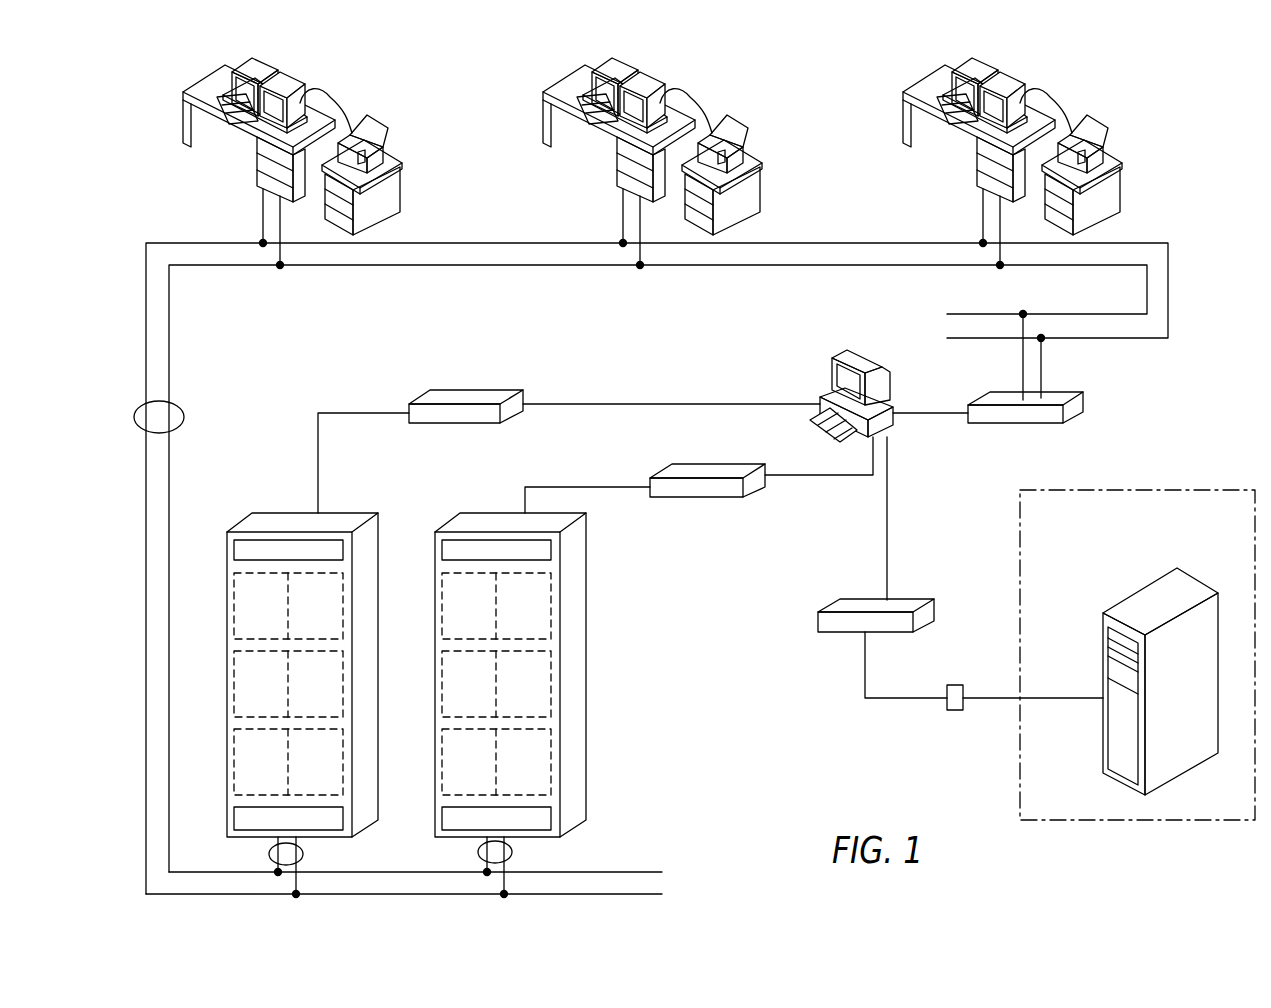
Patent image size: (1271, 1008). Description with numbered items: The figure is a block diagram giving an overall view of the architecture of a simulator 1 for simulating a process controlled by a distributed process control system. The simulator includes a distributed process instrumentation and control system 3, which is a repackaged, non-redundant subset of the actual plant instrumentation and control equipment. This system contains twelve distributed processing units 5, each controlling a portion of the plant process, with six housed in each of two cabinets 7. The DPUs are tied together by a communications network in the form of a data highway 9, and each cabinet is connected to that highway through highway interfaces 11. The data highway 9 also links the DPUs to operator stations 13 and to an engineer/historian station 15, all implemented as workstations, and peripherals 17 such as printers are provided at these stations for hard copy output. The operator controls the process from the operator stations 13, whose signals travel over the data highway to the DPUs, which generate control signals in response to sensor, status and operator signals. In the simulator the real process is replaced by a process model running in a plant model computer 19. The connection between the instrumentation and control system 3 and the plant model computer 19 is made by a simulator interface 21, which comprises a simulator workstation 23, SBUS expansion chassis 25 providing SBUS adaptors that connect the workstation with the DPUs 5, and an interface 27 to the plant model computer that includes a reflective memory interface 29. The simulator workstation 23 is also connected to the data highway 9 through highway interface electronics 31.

The simulator 1 is at (700, 621).
The distributed process instrumentation and control system 3 is at (468, 118).
The distributed processing unit 5 is at (234, 586).
The cabinet 7 is at (272, 512).
The data highway 9 is at (178, 406).
The highway interface 11 is at (303, 854).
The operator station 13 is at (293, 80).
The engineer/historian station 15 is at (1013, 80).
The peripheral 17 is at (387, 148).
The plant model computer 19 is at (1195, 583).
The simulator interface 21 is at (889, 444).
The simulator workstation 23 is at (893, 390).
The SBUS expansion chassis 25 is at (465, 393).
The interface 27 is at (898, 602).
The reflective memory interface 29 is at (949, 711).
The highway interface electronics 31 is at (1068, 388).